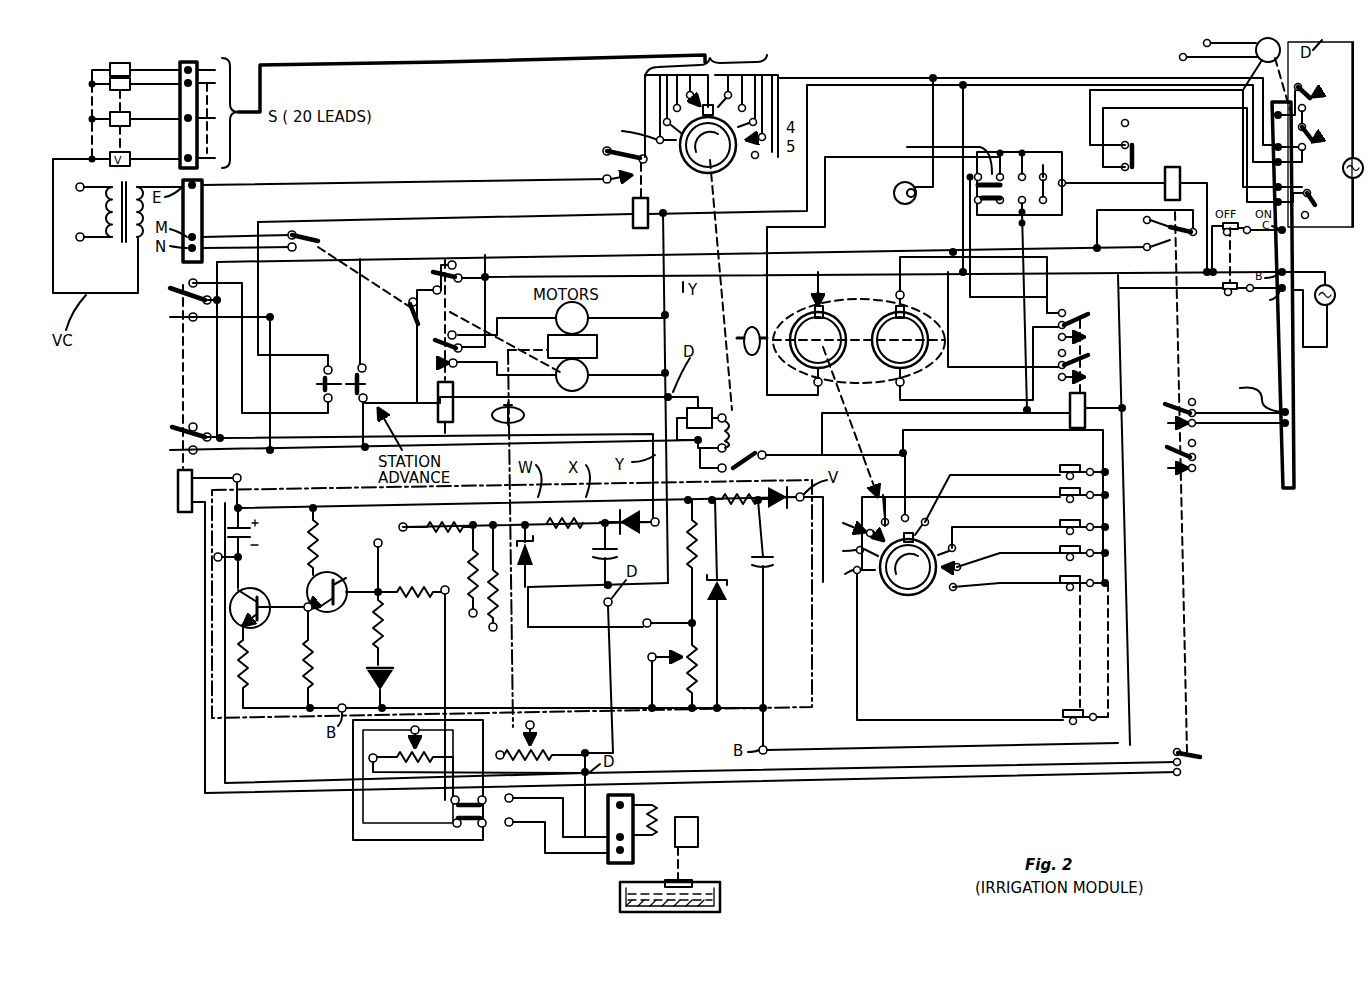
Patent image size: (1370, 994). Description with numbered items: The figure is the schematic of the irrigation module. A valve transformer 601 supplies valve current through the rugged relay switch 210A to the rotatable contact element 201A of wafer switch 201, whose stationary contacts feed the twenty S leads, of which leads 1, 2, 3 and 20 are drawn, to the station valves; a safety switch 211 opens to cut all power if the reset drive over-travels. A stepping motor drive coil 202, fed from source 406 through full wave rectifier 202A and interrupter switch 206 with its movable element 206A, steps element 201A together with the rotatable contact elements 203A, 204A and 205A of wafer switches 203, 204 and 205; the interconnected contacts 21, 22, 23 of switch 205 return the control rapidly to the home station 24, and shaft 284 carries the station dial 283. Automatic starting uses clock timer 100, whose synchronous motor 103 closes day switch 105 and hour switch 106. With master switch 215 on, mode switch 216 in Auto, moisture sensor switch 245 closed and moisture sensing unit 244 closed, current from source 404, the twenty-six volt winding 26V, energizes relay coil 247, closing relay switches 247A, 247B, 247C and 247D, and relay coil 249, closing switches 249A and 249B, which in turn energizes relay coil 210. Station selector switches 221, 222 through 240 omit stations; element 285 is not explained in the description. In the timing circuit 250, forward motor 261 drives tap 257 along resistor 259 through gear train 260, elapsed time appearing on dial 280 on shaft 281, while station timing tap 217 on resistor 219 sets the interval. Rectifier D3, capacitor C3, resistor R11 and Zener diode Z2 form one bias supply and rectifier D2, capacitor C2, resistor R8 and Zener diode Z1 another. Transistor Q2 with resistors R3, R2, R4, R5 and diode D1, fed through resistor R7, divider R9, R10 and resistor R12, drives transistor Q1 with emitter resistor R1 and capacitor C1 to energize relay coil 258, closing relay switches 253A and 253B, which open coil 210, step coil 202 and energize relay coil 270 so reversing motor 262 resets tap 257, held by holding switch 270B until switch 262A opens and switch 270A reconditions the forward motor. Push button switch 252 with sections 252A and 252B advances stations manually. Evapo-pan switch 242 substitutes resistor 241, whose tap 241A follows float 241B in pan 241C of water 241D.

The stationary contact 1 is at (180, 72).
The station 2 is at (180, 85).
The station 3 is at (180, 119).
The S lead 20 is at (180, 160).
The stationary interconnected contact 21 is at (663, 121).
The stationary interconnected contact 22 is at (673, 107).
The stationary interconnected contact 23 is at (686, 93).
The home station 24 is at (718, 102).
The valve transformer 601 is at (118, 242).
The safety switch 211 is at (315, 230).
The relay coil 210 is at (633, 210).
The relay switch 210A is at (618, 166).
The wafer switch 201 is at (730, 168).
The rotatable contact element 201A is at (700, 160).
The wafer switch 203 is at (805, 305).
The rotatable contact element 203A is at (838, 322).
The wafer switch 204 is at (935, 285).
The rotatable contact element 204A is at (930, 345).
The dial 283 is at (750, 325).
The stepper motor driven shaft 284 is at (747, 357).
The stepping motor drive coil 202 is at (732, 420).
The full wave rectifier 202A is at (720, 398).
The interrupter switch 206 is at (750, 455).
The movable element 206A is at (742, 468).
The wafer switch 205 is at (900, 600).
The rotatable contact element 205A is at (920, 600).
The mode switch 216 is at (988, 146).
The indicator lamp 285 is at (898, 192).
The synchronous motor 103 is at (1262, 64).
The day switch 105 is at (1306, 85).
The hour switch 106 is at (1306, 128).
The moisture sensor switch 245 is at (1140, 143).
The relay coil 247 is at (1180, 172).
The relay switch 247A is at (1170, 240).
The relay switch 247B is at (1170, 413).
The relay switch 247C is at (1180, 468).
The relay switch 247D is at (1204, 758).
The clock timer 100 is at (1310, 165).
The secondary winding 406 is at (1316, 203).
The moisture sensing unit 244 is at (1300, 238).
The master switch 215 is at (1195, 300).
The relay coil 249 is at (1088, 408).
The relay switch 249A is at (1090, 330).
The relay switch 249B is at (1090, 368).
The station selector switch 221 is at (1058, 468).
The station selector switch 222 is at (1058, 490).
The station selector switch 240 is at (1070, 707).
The 26V supply 26V is at (1334, 292).
The source 404 is at (1330, 302).
The relay coil 270 is at (438, 410).
The relay switch 270A is at (460, 370).
The holding relay switch 270B is at (470, 272).
The reversing motor 262 is at (588, 382).
The normally closed switch 262A is at (428, 280).
The forward motor 261 is at (588, 310).
The gear train 260 is at (597, 345).
The dial 280 is at (524, 416).
The motor driven shaft 281 is at (508, 482).
The station advance push button switch 252 is at (359, 355).
The switch section 252A is at (326, 402).
The switch section 252B is at (390, 355).
The relay switch 253A is at (170, 296).
The relay switch 253B is at (172, 438).
The relay coil 258 is at (185, 512).
The timing circuit 250 is at (358, 486).
The tap 257 is at (535, 735).
The resistor 259 is at (557, 755).
The station timing tap 217 is at (425, 740).
The resistor 219 is at (400, 762).
The evaporative timing switch 242 is at (492, 818).
The resistor 241 is at (672, 818).
The tap 241A is at (700, 822).
The float 241B is at (692, 880).
The pan 241C is at (720, 884).
The water 241D is at (620, 896).
The capacitor C1 is at (252, 532).
The capacitor C2 is at (594, 552).
The capacitor C3 is at (778, 570).
The transistor Q1 is at (240, 590).
The transistor Q2 is at (352, 560).
The resistor R1 is at (250, 680).
The resistor R2 is at (313, 680).
The resistor R3 is at (320, 535).
The resistor R4 is at (385, 625).
The resistor R5 is at (422, 588).
The resistor R7 is at (505, 598).
The resistor R8 is at (575, 530).
The resistance R9 is at (700, 546).
The adjustable resistor R10 is at (698, 690).
The resistor R11 is at (737, 502).
The resistor R12 is at (470, 565).
The diode D1 is at (392, 680).
The rectifier D2 is at (628, 530).
The rectifier D3 is at (774, 505).
The Zener diode Z1 is at (527, 563).
The Zener diode Z2 is at (722, 604).